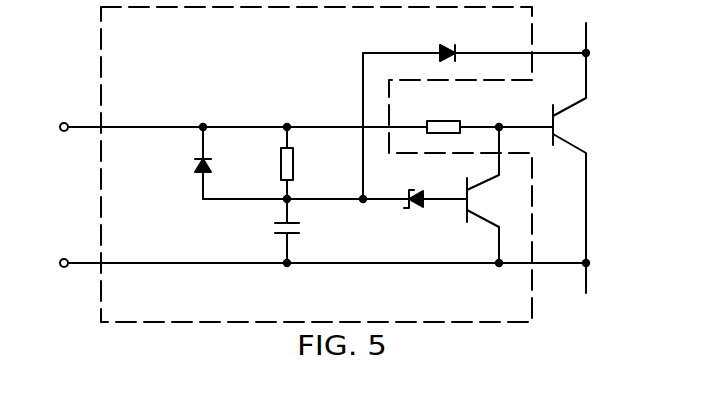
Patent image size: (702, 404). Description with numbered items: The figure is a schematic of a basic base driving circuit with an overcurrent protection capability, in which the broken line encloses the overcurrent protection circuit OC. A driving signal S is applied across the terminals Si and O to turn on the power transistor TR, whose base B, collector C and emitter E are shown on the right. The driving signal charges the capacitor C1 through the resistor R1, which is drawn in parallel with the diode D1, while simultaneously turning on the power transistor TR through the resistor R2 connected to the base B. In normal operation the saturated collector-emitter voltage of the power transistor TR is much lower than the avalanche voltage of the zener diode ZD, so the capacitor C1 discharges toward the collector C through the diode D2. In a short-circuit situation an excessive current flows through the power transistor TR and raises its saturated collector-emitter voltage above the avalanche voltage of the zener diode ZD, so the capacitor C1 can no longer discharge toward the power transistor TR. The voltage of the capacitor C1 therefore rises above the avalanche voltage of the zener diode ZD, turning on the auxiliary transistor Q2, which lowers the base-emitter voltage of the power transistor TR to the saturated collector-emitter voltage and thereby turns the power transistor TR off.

The overcurrent protection circuit OC is at (316, 164).
The terminal Si is at (229, 127).
The driving signal S is at (43, 201).
The terminal O is at (310, 266).
The diode D1 is at (219, 163).
The resistor R1 is at (304, 163).
The capacitor C1 is at (303, 231).
The diode D2 is at (474, 108).
The resistor R2 is at (490, 113).
The base B is at (504, 109).
The zener diode ZD is at (435, 184).
The auxiliary transistor Q2 is at (496, 195).
The power transistor TR is at (587, 158).
The collector C is at (594, 42).
The emitter E is at (594, 275).